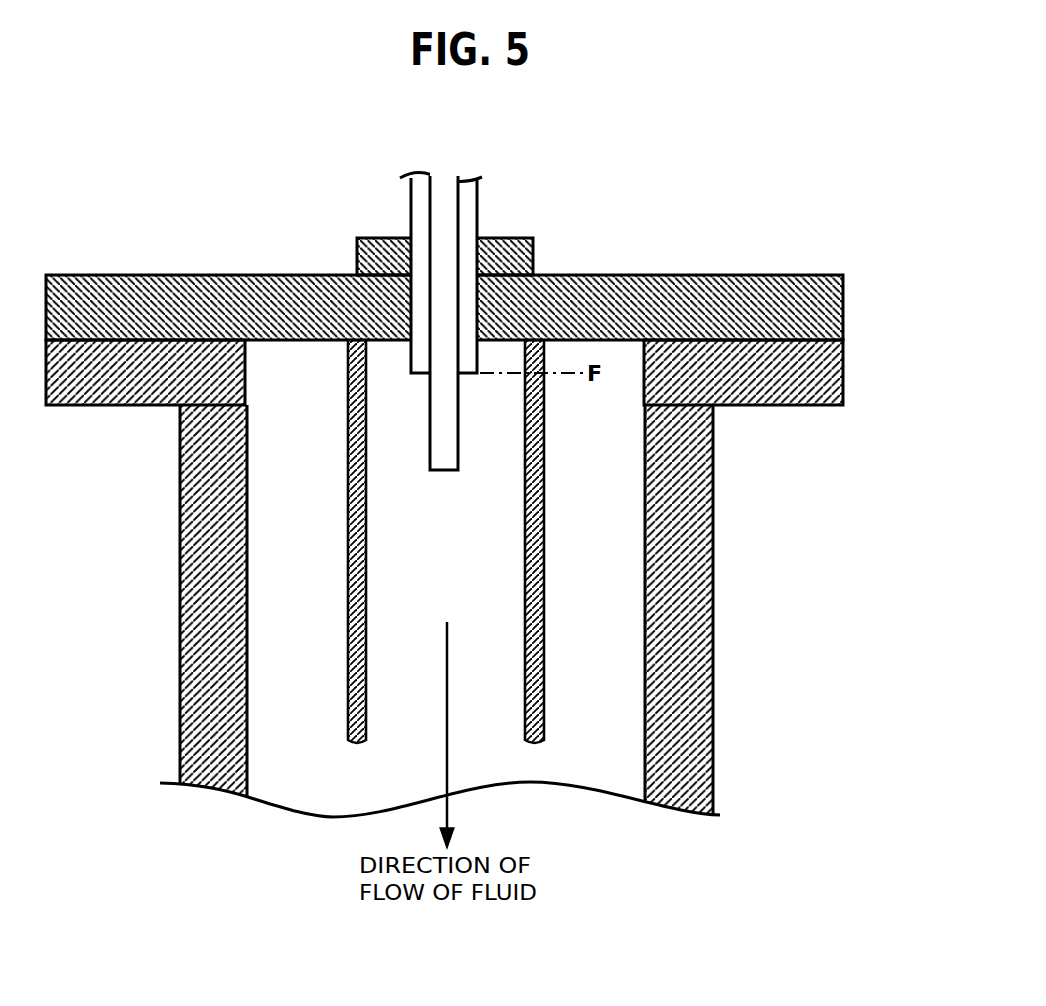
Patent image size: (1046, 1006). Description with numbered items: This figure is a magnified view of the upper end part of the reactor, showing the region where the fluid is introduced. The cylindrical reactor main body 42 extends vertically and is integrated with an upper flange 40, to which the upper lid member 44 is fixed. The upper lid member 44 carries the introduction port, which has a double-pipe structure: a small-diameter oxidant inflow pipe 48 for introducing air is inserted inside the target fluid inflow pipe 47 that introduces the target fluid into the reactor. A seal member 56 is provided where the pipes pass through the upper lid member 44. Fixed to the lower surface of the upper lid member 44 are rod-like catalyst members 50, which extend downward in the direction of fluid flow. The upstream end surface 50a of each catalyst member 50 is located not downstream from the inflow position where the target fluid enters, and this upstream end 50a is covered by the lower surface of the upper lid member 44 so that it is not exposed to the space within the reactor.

The upper flange 40 is at (843, 376).
The reactor main body 42 is at (713, 593).
The upper lid member 44 is at (843, 302).
The target fluid inflow pipe 47 is at (478, 191).
The oxidant inflow pipe 48 is at (438, 203).
The catalyst member 50 is at (348, 556).
The upstream end surface 50a is at (353, 336).
The seal member 56 is at (533, 248).